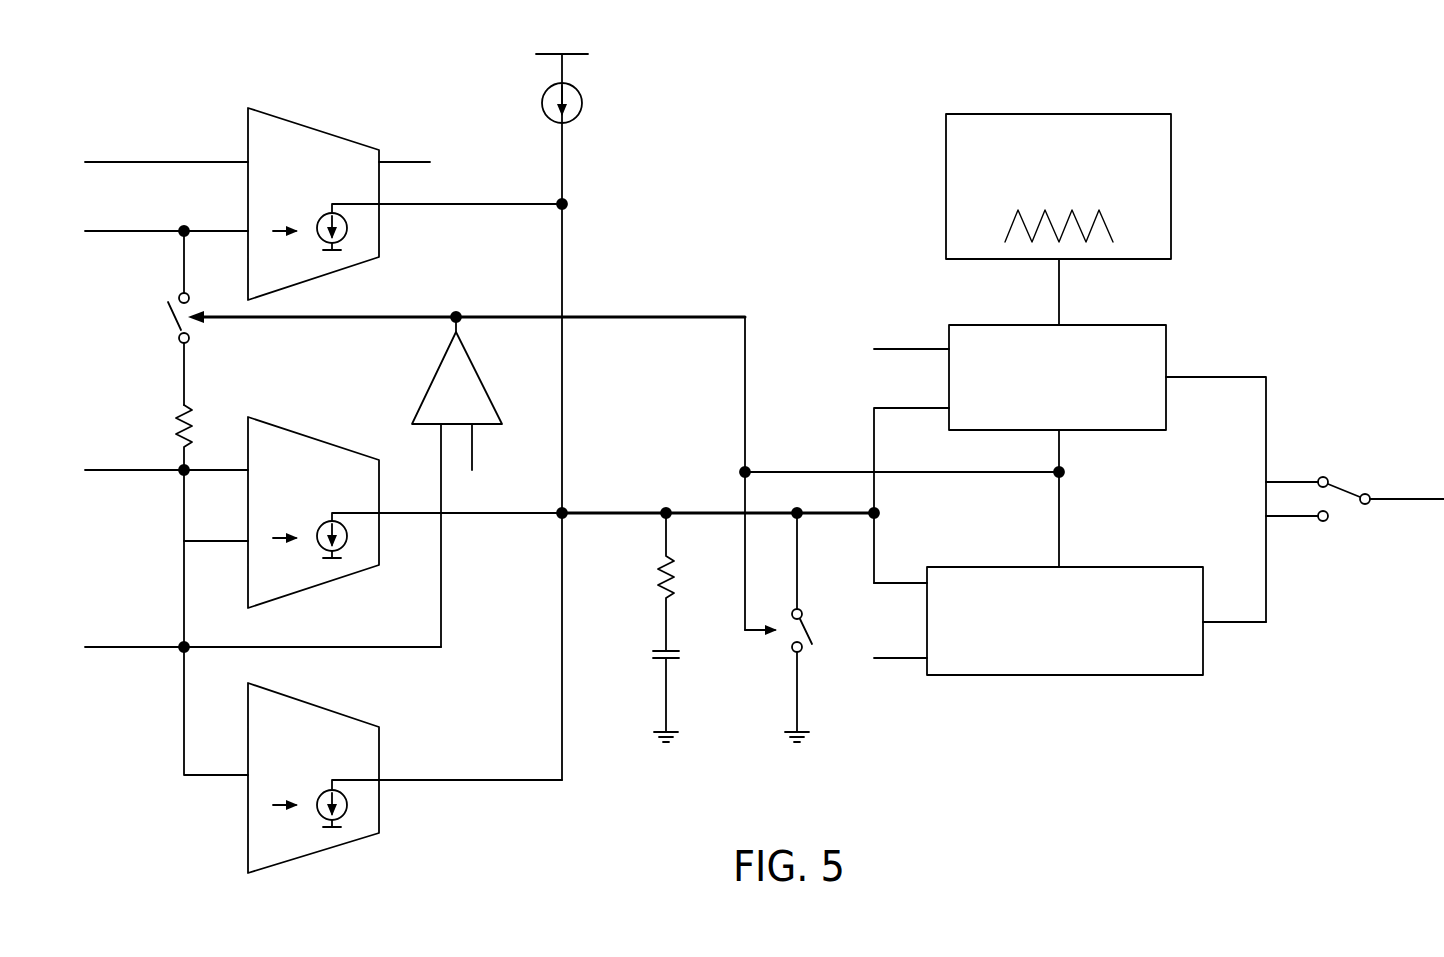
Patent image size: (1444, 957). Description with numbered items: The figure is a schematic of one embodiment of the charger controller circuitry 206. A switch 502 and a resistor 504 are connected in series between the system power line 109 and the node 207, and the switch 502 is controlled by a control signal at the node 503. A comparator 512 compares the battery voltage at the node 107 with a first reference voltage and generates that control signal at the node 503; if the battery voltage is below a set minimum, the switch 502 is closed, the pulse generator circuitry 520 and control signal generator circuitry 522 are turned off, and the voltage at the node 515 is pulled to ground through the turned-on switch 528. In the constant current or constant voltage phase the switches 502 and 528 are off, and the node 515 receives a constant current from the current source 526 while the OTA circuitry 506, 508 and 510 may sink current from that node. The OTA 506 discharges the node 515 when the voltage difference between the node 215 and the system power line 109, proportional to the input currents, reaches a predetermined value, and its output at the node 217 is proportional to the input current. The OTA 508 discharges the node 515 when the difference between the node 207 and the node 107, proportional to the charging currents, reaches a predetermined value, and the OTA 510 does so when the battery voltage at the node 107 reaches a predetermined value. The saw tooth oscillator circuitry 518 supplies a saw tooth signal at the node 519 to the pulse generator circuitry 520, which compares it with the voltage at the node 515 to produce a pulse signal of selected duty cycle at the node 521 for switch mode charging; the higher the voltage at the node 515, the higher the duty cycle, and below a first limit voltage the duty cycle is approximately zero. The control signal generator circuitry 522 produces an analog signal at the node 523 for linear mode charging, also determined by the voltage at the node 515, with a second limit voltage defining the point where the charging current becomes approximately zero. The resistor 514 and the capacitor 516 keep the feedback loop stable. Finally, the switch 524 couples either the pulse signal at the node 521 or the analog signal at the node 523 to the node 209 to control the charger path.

The charger controller circuitry 206 is at (1254, 90).
The node 215 is at (172, 160).
The node 217 is at (410, 160).
The system power line 109 is at (235, 228).
The switch 502 is at (176, 330).
The node 503 is at (375, 313).
The resistor 504 is at (193, 414).
The node 207 is at (182, 477).
The node 107 is at (135, 652).
The OTA circuitry 506 is at (283, 113).
The OTA circuitry 508 is at (283, 421).
The OTA circuitry 510 is at (295, 693).
The comparator 512 is at (485, 386).
The resistor 514 is at (660, 598).
The node 515 is at (565, 508).
The capacitor 516 is at (655, 660).
The saw tooth oscillator circuitry 518 is at (1171, 188).
The node 519 is at (1059, 283).
The pulse generator circuitry 520 is at (1093, 432).
The node 521 is at (1238, 377).
The control signal generator circuitry 522 is at (1063, 675).
The node 523 is at (1235, 622).
The switch 524 is at (1338, 483).
The current source 526 is at (583, 103).
The switch 528 is at (805, 627).
The node 209 is at (1420, 502).